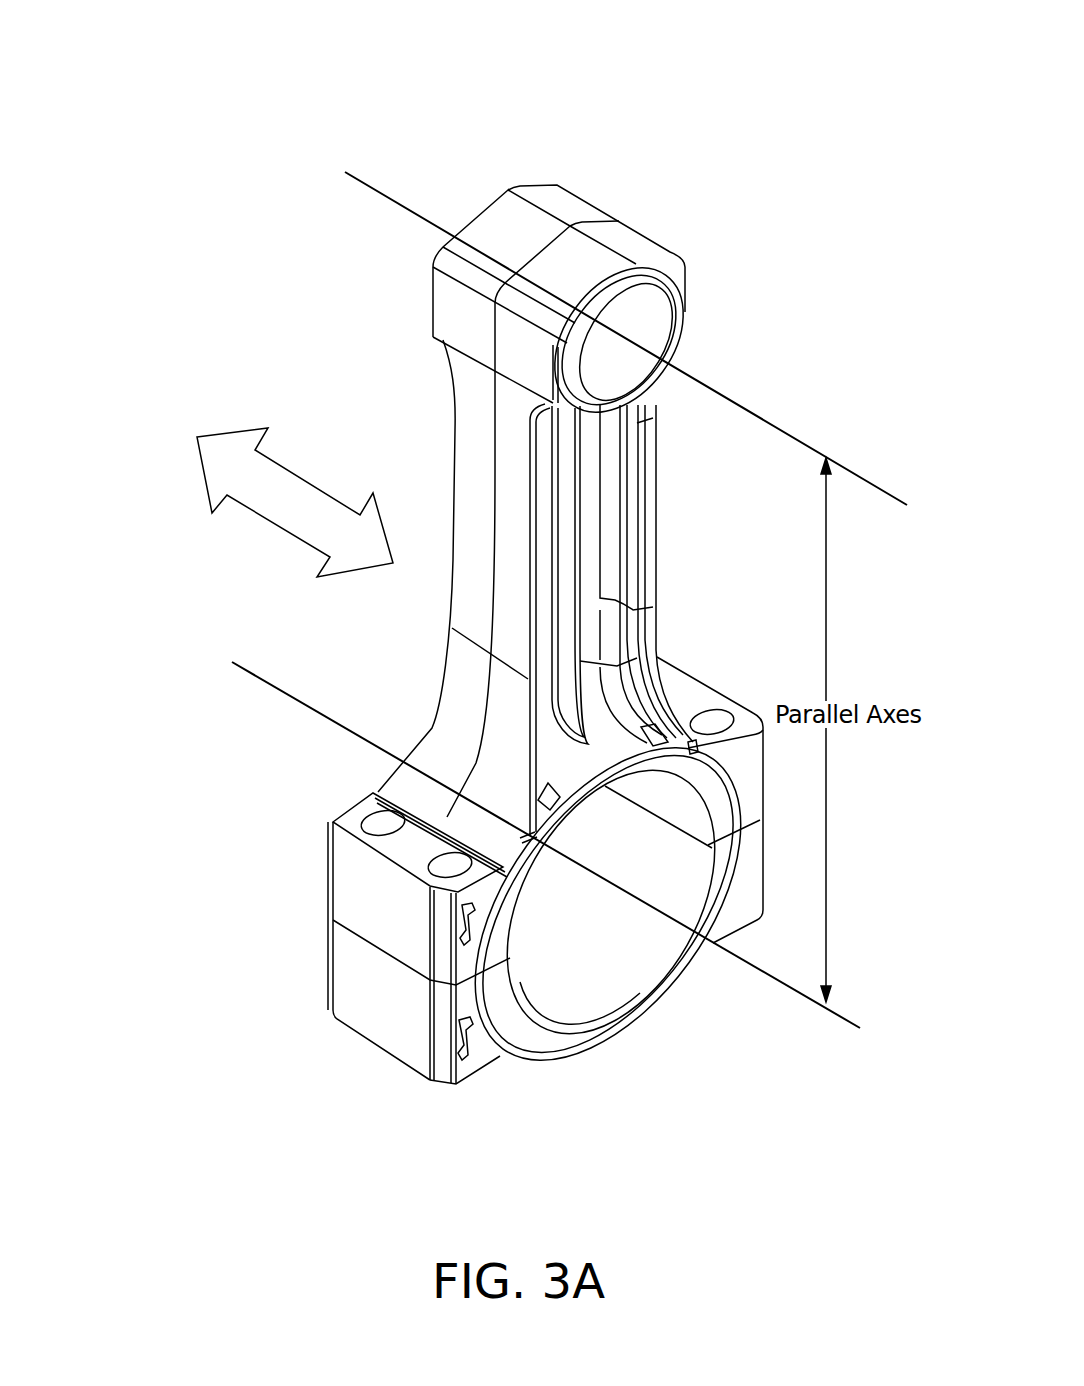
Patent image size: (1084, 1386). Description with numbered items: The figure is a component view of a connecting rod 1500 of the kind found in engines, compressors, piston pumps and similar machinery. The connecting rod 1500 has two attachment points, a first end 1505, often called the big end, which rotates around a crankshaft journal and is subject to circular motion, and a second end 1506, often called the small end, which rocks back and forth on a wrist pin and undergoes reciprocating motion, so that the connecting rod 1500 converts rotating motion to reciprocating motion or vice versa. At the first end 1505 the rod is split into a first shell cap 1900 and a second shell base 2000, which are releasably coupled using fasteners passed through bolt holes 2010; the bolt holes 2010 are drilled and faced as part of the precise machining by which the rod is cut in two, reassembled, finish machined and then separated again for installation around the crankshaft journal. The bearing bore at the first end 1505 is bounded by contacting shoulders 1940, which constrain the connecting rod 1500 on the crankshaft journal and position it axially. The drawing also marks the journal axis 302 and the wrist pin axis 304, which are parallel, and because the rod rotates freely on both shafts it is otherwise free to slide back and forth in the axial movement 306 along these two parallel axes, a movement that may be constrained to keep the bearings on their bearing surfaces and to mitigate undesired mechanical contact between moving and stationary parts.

The connecting rod 1500 is at (465, 618).
The second end 1506 is at (630, 215).
The first end 1505 is at (277, 985).
The second shell base 2000 is at (277, 927).
The bolt holes 2010 is at (450, 865).
The first shell cap 1900 is at (487, 1058).
The contacting shoulders 1940 is at (620, 1032).
The journal axis 302 is at (850, 1018).
The wrist pin axis 304 is at (792, 437).
The axial movement 306 is at (248, 418).